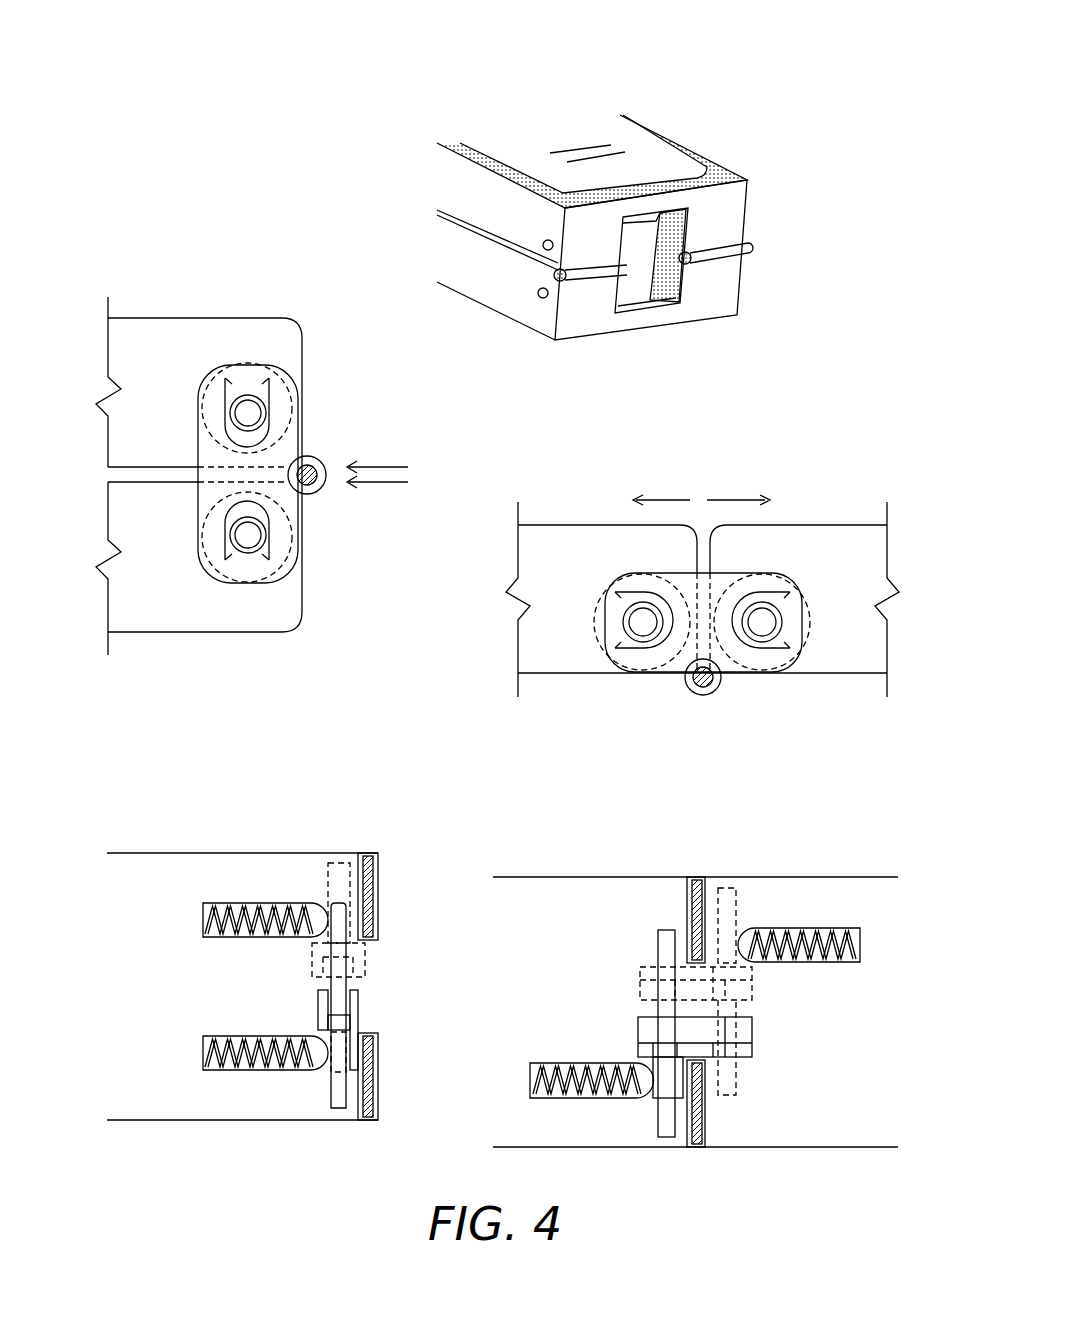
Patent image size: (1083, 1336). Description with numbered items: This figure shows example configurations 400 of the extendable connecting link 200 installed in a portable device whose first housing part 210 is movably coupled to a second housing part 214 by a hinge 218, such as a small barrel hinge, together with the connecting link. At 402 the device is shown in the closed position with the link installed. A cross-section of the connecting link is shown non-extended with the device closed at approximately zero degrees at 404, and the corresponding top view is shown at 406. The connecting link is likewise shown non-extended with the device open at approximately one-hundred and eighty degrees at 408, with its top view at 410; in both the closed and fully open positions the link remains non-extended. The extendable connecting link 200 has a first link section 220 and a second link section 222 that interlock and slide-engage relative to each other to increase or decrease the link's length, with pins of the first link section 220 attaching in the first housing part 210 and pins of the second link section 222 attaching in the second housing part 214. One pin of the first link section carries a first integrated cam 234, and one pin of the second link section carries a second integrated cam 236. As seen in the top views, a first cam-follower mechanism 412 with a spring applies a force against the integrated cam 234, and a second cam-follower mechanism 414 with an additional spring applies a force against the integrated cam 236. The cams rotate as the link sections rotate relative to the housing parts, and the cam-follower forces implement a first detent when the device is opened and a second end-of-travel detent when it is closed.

The example configurations 400 is at (737, 61).
The closed position 402 is at (503, 106).
The cross-section in closed position 404 is at (182, 246).
The top view in closed position 406 is at (189, 786).
The cross-section in open position 408 is at (788, 459).
The top view in open position 410 is at (704, 832).
The extendable connecting link 200 is at (638, 287).
The first housing part 210 is at (718, 167).
The second housing part 214 is at (572, 342).
The hinge 218 is at (730, 250).
The first link section 220 is at (255, 365).
The second link section 222 is at (253, 585).
The first integrated cam 234 is at (280, 407).
The second integrated cam 236 is at (280, 537).
The first cam-follower mechanism 412 is at (203, 923).
The second cam-follower mechanism 414 is at (233, 1035).